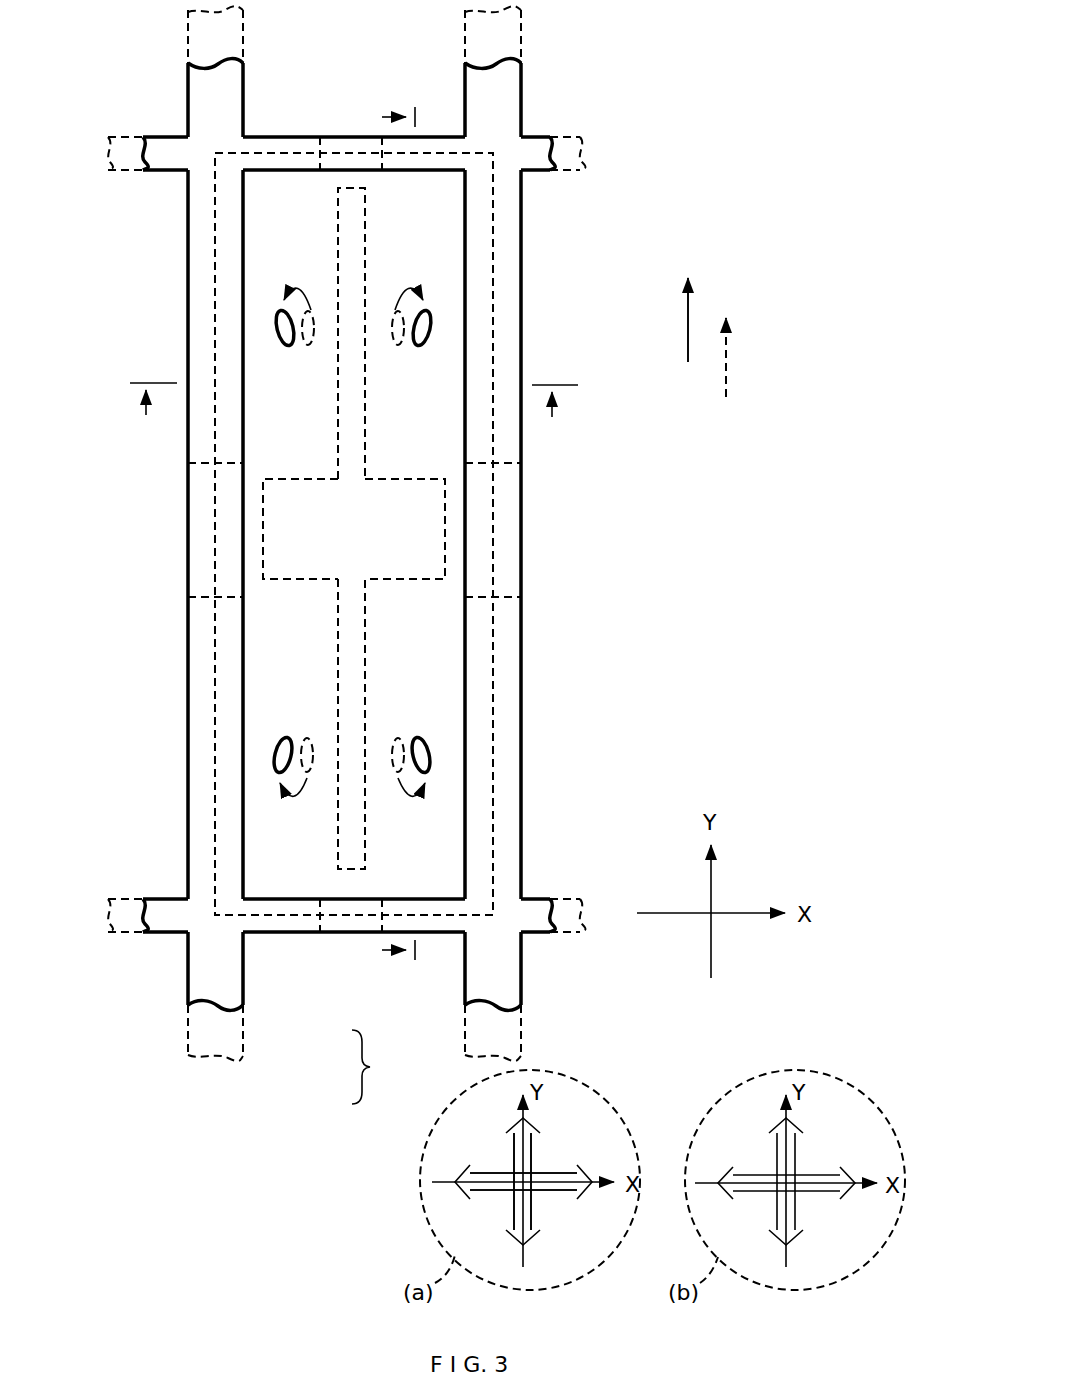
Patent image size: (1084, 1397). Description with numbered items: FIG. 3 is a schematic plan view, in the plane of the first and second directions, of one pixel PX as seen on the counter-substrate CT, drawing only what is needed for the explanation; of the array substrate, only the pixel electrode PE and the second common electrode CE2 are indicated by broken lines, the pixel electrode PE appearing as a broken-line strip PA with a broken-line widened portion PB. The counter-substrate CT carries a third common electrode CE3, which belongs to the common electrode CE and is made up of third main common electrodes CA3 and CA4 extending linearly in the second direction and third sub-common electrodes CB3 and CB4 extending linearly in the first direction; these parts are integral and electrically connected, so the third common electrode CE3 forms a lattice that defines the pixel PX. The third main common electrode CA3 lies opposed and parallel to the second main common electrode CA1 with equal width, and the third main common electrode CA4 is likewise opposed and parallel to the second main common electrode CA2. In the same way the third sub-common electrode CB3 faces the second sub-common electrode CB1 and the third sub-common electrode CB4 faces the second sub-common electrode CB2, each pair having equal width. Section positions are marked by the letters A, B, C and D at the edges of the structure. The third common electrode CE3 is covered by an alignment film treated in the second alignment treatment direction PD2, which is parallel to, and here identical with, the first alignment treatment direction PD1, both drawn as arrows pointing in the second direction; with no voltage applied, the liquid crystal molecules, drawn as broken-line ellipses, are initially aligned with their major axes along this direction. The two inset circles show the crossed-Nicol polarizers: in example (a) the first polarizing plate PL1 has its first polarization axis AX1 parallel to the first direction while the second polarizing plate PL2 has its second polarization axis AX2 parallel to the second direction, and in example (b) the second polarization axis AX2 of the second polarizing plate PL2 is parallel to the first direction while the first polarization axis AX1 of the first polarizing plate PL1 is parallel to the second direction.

The second main common electrode CA1 is at (188, 40).
The second main common electrode CA2 is at (521, 30).
The third main common electrode CA3 is at (188, 822).
The third main common electrode CA4 is at (521, 667).
The second sub-common electrode CB1 is at (118, 170).
The second sub-common electrode CB2 is at (118, 932).
The third sub-common electrode CB3 is at (305, 137).
The third sub-common electrode CB4 is at (301, 932).
The common electrode CE is at (378, 1067).
The second common electrode CE2 is at (248, 1061).
The third common electrode CE3 is at (248, 994).
The counter-substrate CT is at (668, 78).
The pixel PX is at (502, 147).
The pixel electrode main portion PA is at (338, 228).
The pixel electrode connecting portion PB is at (417, 579).
The pixel electrode PE is at (362, 376).
The first alignment treatment direction PD1 is at (726, 358).
The second alignment treatment direction PD2 is at (688, 303).
The first polarization axis AX1 is at (562, 1196).
The second polarization axis AX2 is at (531, 1143).
The first polarizing plate PL1 is at (532, 1219).
The second polarizing plate PL2 is at (566, 1181).
The section line A is at (153, 414).
The section line B is at (555, 416).
The section line C is at (387, 119).
The section line D is at (387, 952).